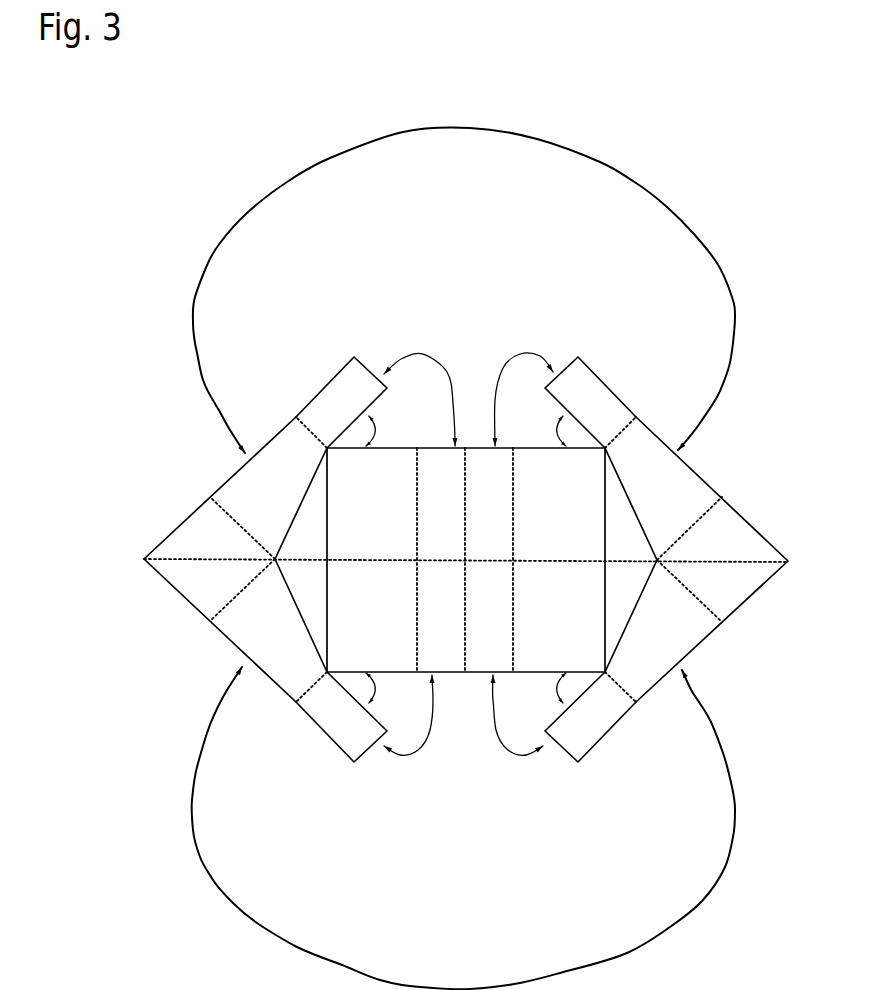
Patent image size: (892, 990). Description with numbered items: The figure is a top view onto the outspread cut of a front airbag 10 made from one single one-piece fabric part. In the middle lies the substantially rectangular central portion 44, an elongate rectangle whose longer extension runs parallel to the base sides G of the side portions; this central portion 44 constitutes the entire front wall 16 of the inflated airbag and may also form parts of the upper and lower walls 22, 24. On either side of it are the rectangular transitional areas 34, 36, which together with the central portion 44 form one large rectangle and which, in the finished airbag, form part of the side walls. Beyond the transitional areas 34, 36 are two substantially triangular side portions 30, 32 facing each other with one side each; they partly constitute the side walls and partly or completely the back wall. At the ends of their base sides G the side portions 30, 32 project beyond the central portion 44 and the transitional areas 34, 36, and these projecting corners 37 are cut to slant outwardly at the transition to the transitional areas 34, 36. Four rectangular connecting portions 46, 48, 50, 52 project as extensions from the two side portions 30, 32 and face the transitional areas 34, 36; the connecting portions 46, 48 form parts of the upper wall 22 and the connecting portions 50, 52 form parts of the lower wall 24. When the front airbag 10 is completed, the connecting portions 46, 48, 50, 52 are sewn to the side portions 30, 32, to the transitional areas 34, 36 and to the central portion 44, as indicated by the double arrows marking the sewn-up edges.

The front airbag 10 is at (237, 289).
The front wall 16 is at (505, 536).
The upper wall 22 is at (507, 366).
The lower wall 24 is at (469, 747).
The side portion 30 is at (197, 544).
The side portion 32 is at (723, 524).
The transitional area 34 is at (380, 467).
The transitional area 36 is at (552, 477).
The projecting corner 37 is at (297, 414).
The central portion 44 is at (482, 661).
The connecting portion 46 is at (361, 390).
The connecting portion 48 is at (588, 395).
The connecting portion 50 is at (358, 746).
The connecting portion 52 is at (575, 747).
The base side G is at (326, 497).